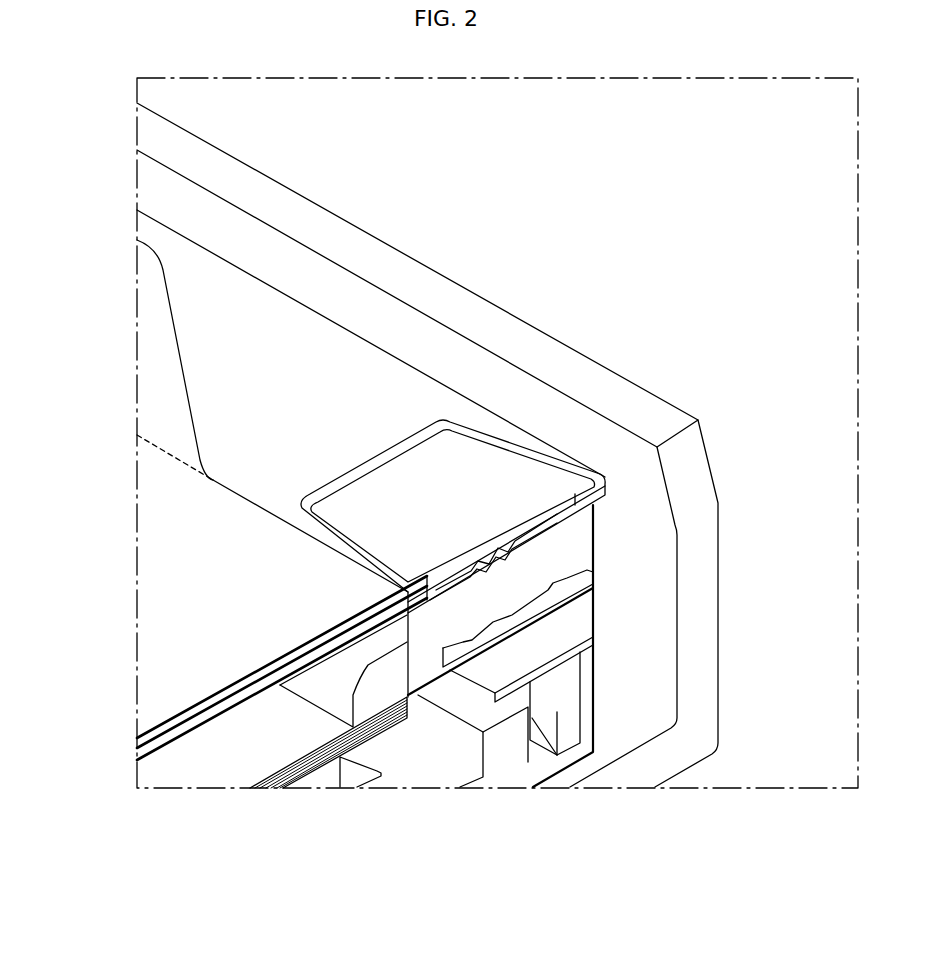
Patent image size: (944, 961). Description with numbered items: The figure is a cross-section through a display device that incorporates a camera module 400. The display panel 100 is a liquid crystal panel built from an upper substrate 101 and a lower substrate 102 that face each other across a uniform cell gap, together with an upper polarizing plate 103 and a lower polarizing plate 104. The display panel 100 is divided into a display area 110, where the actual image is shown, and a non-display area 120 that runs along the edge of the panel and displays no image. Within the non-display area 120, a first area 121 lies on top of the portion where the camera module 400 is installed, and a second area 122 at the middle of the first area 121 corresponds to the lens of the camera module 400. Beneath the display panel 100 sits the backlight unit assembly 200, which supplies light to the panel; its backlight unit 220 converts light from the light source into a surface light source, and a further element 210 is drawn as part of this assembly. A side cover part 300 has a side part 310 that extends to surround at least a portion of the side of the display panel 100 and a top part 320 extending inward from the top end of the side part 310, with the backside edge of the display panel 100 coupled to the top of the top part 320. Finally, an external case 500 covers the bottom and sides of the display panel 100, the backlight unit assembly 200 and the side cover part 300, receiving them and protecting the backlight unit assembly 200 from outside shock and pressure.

The display panel 100 is at (226, 694).
The upper substrate 101 is at (137, 752).
The lower substrate 102 is at (140, 762).
The upper polarizing plate 103 is at (137, 737).
The lower polarizing plate 104 is at (78, 718).
The display area 110 is at (183, 572).
The non-display area 120 is at (152, 374).
The first area 121 is at (307, 340).
The second area 122 is at (460, 457).
The backlight unit assembly 200 is at (404, 769).
The first support body 210 is at (433, 777).
The backlight unit 220 is at (325, 777).
The side cover part 300 is at (536, 746).
The side part 310 is at (393, 677).
The top part 320 is at (563, 715).
The camera module 400 is at (612, 536).
The external case 500 is at (702, 618).